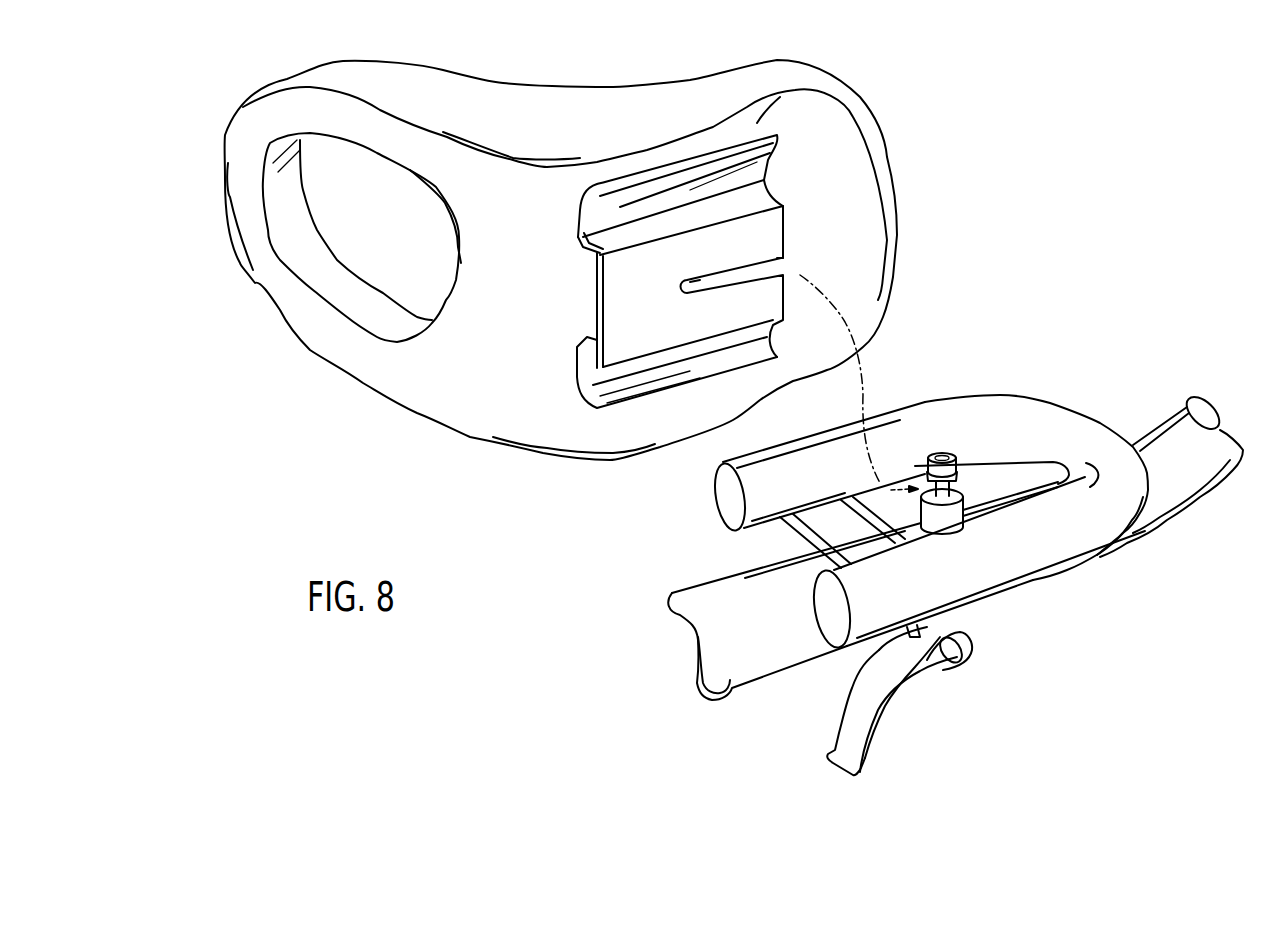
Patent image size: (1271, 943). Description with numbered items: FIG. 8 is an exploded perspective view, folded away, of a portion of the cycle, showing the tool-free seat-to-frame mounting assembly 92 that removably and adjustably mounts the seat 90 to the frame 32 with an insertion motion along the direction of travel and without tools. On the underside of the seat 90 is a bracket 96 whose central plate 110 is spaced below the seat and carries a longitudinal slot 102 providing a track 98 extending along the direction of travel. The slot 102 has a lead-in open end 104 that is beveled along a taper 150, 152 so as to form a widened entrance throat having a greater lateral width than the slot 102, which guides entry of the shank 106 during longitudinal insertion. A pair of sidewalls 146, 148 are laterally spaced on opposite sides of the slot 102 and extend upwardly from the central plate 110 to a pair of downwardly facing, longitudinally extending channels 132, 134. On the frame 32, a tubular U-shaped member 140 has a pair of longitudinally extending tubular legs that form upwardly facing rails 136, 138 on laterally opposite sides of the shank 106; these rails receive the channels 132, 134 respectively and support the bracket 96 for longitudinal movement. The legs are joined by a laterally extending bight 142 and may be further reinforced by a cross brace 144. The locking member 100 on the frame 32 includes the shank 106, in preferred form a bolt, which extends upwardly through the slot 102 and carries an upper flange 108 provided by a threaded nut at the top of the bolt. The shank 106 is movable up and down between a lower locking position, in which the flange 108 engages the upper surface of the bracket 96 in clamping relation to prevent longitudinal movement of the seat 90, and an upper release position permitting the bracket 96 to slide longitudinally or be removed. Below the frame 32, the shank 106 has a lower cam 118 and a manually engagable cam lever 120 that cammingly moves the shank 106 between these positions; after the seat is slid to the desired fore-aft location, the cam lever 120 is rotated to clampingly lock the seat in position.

The frame 32 is at (748, 693).
The seat 90 is at (747, 63).
The tool-free seat-to-frame mounting assembly 92 is at (988, 364).
The bracket 96 is at (710, 313).
The track 98 is at (715, 287).
The locking member 100 is at (977, 486).
The longitudinal slot 102 is at (719, 283).
The lead-in open end 104 is at (775, 260).
The shank 106 is at (972, 494).
The upper flange 108 is at (966, 470).
The central plate 110 is at (618, 293).
The lower cam 118 is at (963, 667).
The cam lever 120 is at (872, 750).
The channel 132 is at (597, 220).
The channel 134 is at (590, 374).
The rail 136 is at (980, 563).
The rail 138 is at (893, 427).
The tubular U-shaped member 140 is at (1108, 427).
The bight 142 is at (1133, 480).
The cross brace 144 is at (810, 519).
The sidewall 146 is at (597, 243).
The sidewall 148 is at (604, 322).
The taper 150 is at (787, 254).
The taper 152 is at (783, 270).